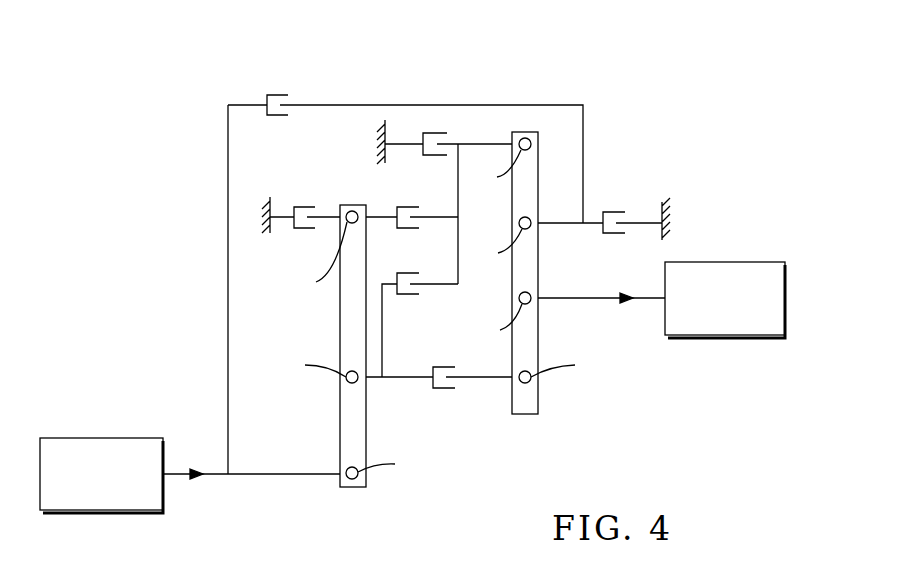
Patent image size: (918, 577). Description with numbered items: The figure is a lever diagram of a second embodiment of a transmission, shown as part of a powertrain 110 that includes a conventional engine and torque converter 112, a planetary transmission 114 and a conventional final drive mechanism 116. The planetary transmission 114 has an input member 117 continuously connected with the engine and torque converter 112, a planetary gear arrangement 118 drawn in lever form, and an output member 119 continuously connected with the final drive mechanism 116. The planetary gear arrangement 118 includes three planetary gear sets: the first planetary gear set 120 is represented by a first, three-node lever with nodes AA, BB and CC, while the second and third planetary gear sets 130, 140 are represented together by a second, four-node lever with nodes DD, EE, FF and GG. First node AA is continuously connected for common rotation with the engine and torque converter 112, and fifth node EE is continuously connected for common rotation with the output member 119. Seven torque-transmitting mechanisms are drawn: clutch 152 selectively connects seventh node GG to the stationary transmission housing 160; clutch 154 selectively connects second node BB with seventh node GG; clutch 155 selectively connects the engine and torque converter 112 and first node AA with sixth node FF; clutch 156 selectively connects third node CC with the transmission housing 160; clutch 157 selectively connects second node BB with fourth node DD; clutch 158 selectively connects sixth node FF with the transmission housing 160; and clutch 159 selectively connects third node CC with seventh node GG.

The powertrain 110 is at (618, 55).
The engine and torque converter 112 is at (97, 436).
The planetary transmission 114 is at (431, 76).
The final drive mechanism 116 is at (752, 260).
The input member 117 is at (215, 477).
The planetary gear arrangement 118 is at (511, 72).
The output member 119 is at (593, 300).
The first planetary gear set 120 is at (384, 495).
The second planetary gear set 130 is at (536, 307).
The third planetary gear set 140 is at (556, 420).
The clutch 152 is at (442, 121).
The clutch 154 is at (425, 325).
The clutch 155 is at (271, 80).
The clutch 156 is at (302, 240).
The clutch 157 is at (448, 403).
The clutch 158 is at (622, 196).
The clutch 159 is at (407, 200).
The transmission housing 160 is at (380, 120).